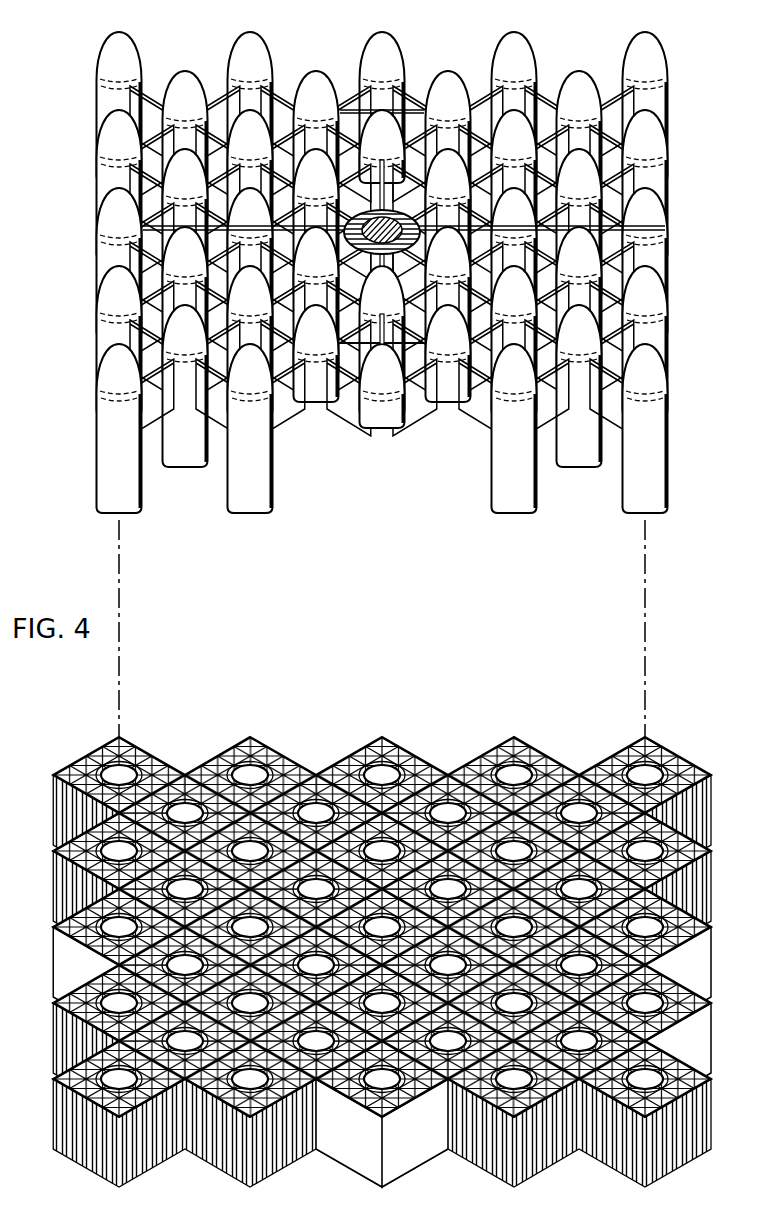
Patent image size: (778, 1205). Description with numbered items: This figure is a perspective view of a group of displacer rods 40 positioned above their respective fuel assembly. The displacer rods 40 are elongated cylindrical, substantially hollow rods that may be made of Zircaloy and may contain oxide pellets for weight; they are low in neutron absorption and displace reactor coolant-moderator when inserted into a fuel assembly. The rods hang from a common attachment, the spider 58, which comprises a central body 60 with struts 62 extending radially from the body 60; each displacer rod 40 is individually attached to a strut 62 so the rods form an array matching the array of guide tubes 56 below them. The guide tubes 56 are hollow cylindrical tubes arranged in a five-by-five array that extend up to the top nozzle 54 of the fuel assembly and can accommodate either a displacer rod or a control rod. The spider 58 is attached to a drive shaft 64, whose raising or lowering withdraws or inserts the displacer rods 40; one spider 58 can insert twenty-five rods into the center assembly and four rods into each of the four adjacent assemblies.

The displacer rod 40 is at (313, 404).
The top nozzle 54 is at (66, 960).
The guide tube 56 is at (319, 797).
The spider 58 is at (600, 258).
The body 60 is at (378, 214).
The strut 62 is at (158, 72).
The drive shaft 64 is at (388, 224).